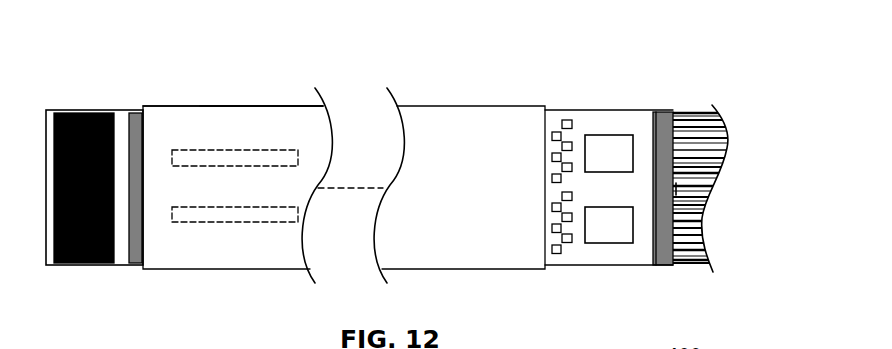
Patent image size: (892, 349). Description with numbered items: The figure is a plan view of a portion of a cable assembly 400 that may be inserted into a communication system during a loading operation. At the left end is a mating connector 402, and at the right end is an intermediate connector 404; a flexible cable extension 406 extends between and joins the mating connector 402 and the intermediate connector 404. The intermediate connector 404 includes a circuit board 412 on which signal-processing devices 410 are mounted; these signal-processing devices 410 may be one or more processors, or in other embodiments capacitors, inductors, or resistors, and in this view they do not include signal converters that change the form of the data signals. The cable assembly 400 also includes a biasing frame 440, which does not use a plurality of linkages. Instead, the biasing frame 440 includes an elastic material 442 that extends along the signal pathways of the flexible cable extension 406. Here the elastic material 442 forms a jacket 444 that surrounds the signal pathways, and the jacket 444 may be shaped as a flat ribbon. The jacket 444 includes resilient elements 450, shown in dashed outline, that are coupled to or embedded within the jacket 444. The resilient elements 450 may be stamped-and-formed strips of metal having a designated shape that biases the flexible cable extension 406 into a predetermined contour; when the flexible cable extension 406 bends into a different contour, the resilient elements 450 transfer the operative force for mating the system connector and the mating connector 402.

The cable assembly 400 is at (628, 48).
The mating connector 402 is at (77, 93).
The intermediate connector 404 is at (694, 80).
The flexible cable extension 406 is at (471, 83).
The signal-processing devices 410 is at (613, 130).
The circuit board 412 is at (593, 108).
The biasing frame 440 is at (248, 100).
The elastic material 442 is at (277, 122).
The jacket 444 is at (175, 105).
The resilient elements 450 is at (190, 222).